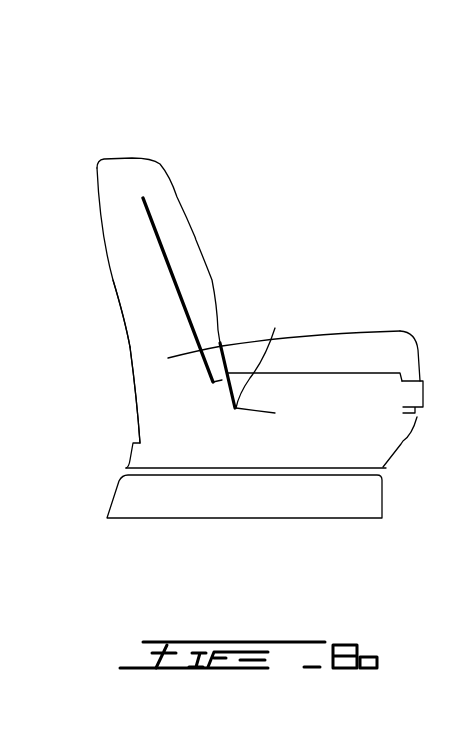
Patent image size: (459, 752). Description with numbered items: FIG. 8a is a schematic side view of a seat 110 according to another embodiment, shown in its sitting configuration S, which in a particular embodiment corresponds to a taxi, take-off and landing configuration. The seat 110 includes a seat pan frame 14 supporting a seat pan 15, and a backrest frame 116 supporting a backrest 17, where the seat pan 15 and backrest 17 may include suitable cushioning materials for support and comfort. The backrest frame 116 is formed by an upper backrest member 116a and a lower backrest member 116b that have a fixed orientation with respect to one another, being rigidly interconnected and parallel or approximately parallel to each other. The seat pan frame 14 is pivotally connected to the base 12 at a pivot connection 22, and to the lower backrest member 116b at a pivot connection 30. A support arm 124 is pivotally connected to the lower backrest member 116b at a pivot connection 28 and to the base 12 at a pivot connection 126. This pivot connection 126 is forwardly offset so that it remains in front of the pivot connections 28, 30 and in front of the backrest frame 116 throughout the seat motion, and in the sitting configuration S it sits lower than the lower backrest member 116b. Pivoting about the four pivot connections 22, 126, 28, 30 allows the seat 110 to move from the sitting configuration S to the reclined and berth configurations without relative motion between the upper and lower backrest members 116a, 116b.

The seat 110 is at (270, 205).
The sitting configuration S is at (125, 139).
The backrest 17 is at (157, 185).
The backrest frame 116 is at (164, 246).
The upper backrest member 116a is at (168, 268).
The lower backrest member 116b is at (223, 395).
The pivot connection 30 is at (227, 350).
The pivot connection 28 is at (275, 342).
The seat pan frame 14 is at (343, 373).
The seat pan 15 is at (390, 345).
The pivot connection 22 is at (420, 382).
The base 12 is at (158, 447).
The support arm 124 is at (257, 415).
The pivot connection 126 is at (275, 413).